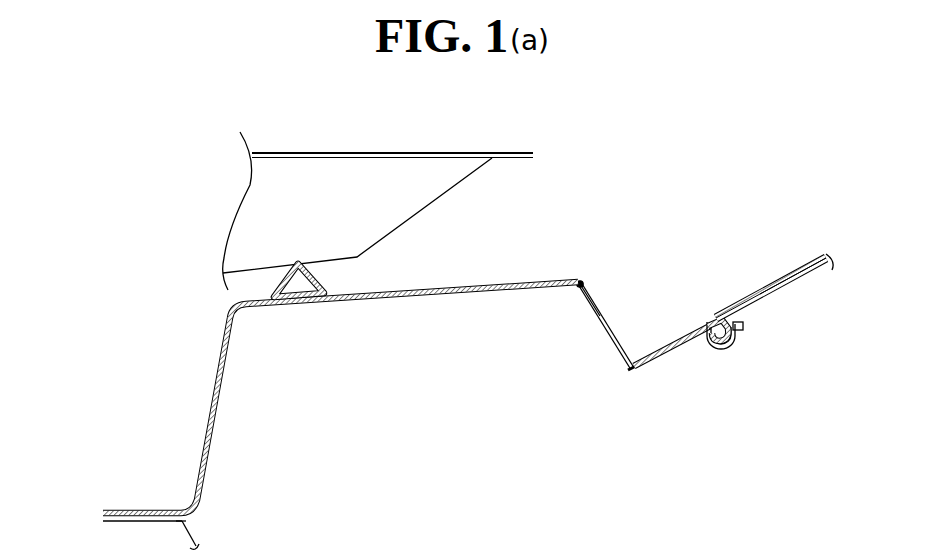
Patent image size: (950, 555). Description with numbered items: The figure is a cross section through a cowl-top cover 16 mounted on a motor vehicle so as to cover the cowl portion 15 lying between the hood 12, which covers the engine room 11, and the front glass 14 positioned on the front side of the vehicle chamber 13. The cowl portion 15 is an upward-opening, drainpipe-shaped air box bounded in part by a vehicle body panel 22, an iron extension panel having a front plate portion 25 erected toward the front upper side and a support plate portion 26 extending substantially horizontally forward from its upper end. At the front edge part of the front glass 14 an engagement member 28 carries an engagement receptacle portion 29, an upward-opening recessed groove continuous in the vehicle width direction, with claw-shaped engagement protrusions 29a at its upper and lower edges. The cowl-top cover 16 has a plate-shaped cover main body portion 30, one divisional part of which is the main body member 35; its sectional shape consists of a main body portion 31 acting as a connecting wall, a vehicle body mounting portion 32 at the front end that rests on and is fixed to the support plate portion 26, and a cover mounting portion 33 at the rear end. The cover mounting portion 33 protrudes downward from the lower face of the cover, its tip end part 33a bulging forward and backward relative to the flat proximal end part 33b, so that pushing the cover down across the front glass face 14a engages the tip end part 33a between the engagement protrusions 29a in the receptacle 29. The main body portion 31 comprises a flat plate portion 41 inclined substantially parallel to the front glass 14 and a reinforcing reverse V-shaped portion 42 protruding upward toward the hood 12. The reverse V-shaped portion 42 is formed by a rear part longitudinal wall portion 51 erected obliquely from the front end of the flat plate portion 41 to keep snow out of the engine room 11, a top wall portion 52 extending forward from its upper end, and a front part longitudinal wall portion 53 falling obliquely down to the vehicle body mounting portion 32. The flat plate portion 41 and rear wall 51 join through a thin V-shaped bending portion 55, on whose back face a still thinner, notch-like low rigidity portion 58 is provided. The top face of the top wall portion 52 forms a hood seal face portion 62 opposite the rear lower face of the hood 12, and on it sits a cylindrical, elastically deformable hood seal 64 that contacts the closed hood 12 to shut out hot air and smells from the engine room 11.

The engine room 11 is at (163, 423).
The hood 12 is at (460, 152).
The vehicle chamber 13 is at (807, 308).
The front glass 14 is at (760, 290).
The front glass face 14a is at (795, 267).
The cowl portion 15 is at (572, 445).
The cowl-top cover 16 is at (521, 229).
The vehicle body panel 22 is at (200, 542).
The front plate portion 25 is at (190, 522).
The support plate portion 26 is at (145, 523).
The engagement member 28 is at (729, 340).
The engagement receptacle portion 29 is at (728, 344).
The engagement protrusions 29a is at (720, 316).
The cover main body portion 30 is at (443, 289).
The main body portion 31 is at (576, 282).
The vehicle body mounting portion 32 is at (223, 367).
The cover mounting portion 33 is at (736, 330).
The tip end part 33a is at (718, 356).
The proximal end part 33b is at (708, 325).
The main body member 35 is at (232, 328).
The flat plate portion 41 is at (667, 342).
The reverse V-shaped portion 42 is at (578, 300).
The rear part longitudinal wall portion 51 is at (603, 317).
The top wall portion 52 is at (280, 307).
The front part longitudinal wall portion 53 is at (215, 403).
The bending portion 55 is at (630, 377).
The low rigidity portion 58 is at (636, 368).
The hood seal face portion 62 is at (398, 294).
The hood seal 64 is at (307, 265).